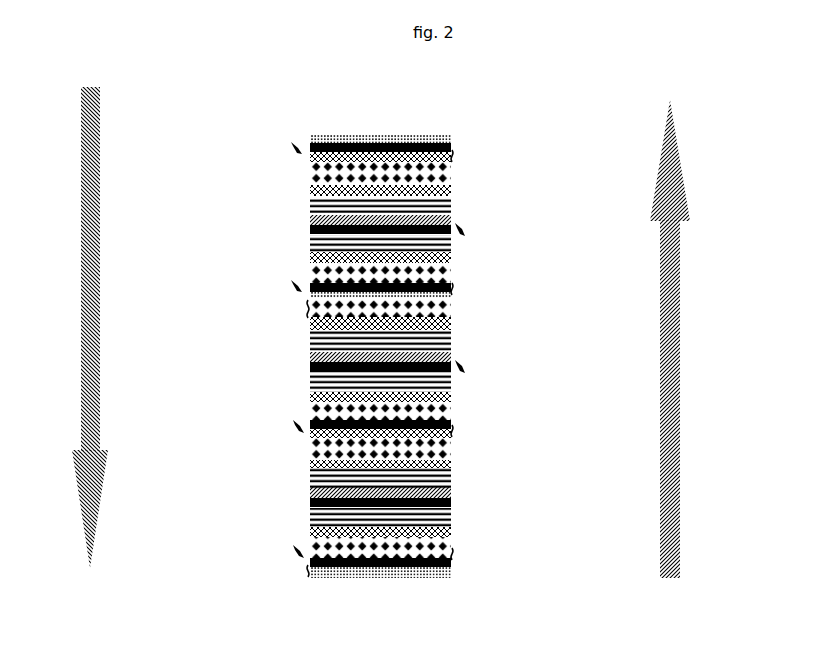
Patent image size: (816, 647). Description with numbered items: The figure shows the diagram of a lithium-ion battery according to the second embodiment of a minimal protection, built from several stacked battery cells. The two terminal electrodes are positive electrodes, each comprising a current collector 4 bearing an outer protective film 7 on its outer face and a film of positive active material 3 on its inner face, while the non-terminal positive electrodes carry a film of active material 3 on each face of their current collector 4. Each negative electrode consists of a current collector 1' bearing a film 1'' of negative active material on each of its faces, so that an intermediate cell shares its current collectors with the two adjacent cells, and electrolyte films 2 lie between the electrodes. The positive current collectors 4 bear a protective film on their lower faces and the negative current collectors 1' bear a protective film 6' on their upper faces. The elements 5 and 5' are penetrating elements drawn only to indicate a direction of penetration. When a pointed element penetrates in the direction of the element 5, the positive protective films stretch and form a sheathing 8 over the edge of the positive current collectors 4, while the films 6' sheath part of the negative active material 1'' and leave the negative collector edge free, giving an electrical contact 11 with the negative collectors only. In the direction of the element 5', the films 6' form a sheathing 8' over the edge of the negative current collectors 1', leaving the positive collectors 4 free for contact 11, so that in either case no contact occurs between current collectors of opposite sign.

The current collector of a negative electrode 1' is at (328, 290).
The film of negative electrode active material 1'' is at (306, 342).
The electrolyte film 2 is at (454, 259).
The film of positive electrode active material 3 is at (453, 171).
The current collector of positive electrode 4 is at (452, 433).
The nail 5 is at (719, 339).
The penetrating element 5' is at (124, 324).
The protective film for a negative electrode 6' is at (341, 457).
The outer protective film 7 is at (397, 137).
The sheathing produced by stretching of a film 6 8 is at (385, 387).
The sheathing produced by stretching of a film 6' 8' is at (417, 356).
The electrical contact between a conductive penetrating element and a current collec 11 is at (297, 284).